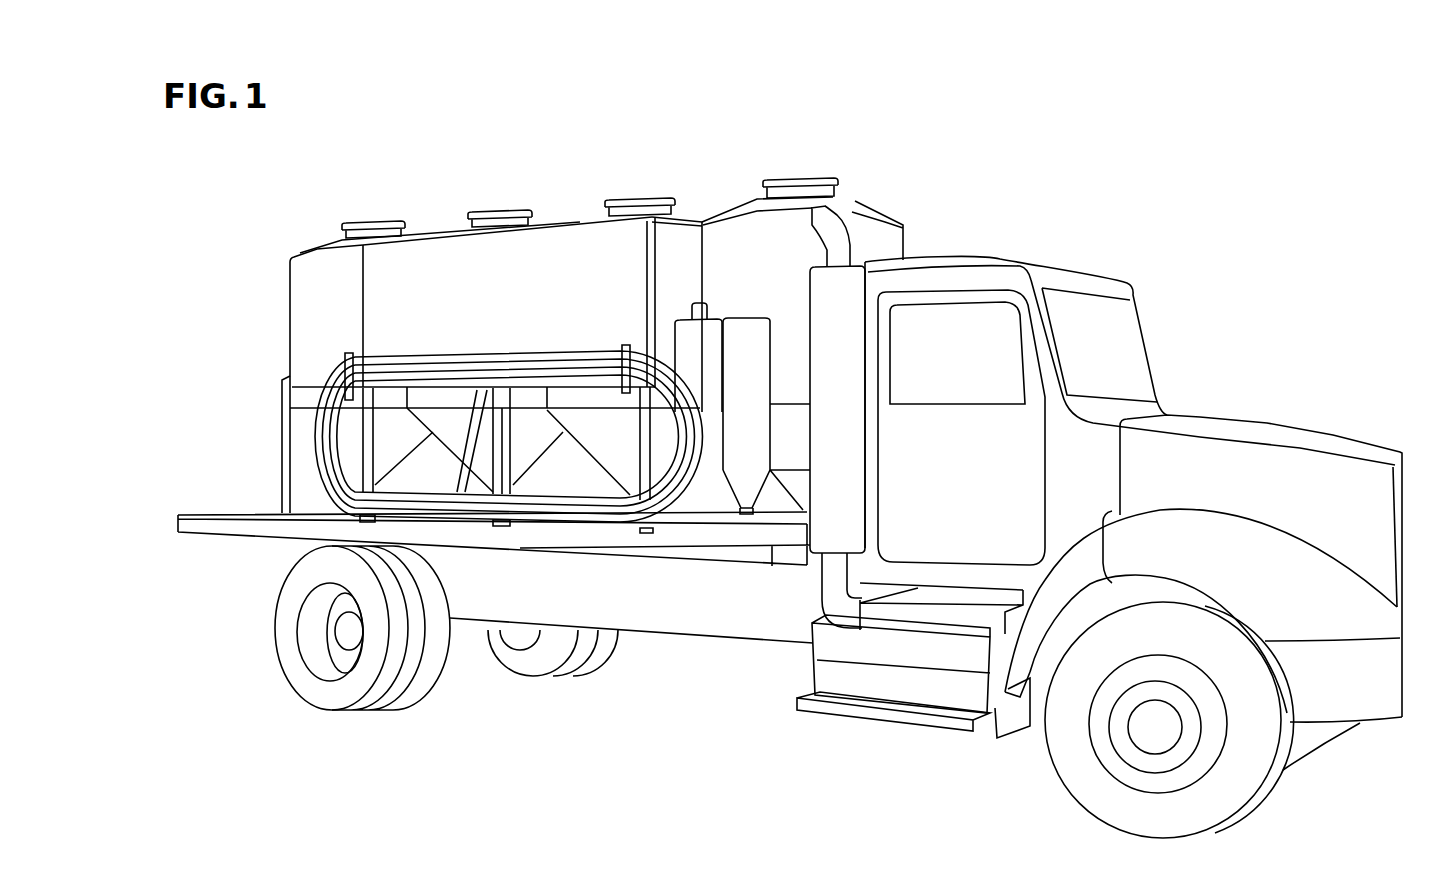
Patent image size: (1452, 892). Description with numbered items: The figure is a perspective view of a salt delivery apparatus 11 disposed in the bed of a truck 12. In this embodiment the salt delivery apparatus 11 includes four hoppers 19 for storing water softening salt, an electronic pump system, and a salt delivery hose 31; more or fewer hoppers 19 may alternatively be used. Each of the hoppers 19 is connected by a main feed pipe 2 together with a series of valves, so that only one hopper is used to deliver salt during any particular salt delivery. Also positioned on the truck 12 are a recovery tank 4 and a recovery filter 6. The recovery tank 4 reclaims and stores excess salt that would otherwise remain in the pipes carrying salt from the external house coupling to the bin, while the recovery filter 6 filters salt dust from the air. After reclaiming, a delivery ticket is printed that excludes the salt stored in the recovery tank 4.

The main feed pipe 2 is at (775, 518).
The recovery tank 4 is at (757, 458).
The recovery filter 6 is at (707, 387).
The salt delivery apparatus 11 is at (1153, 182).
The truck 12 is at (1118, 290).
The hoppers 19 is at (328, 274).
The salt delivery hose 31 is at (313, 443).